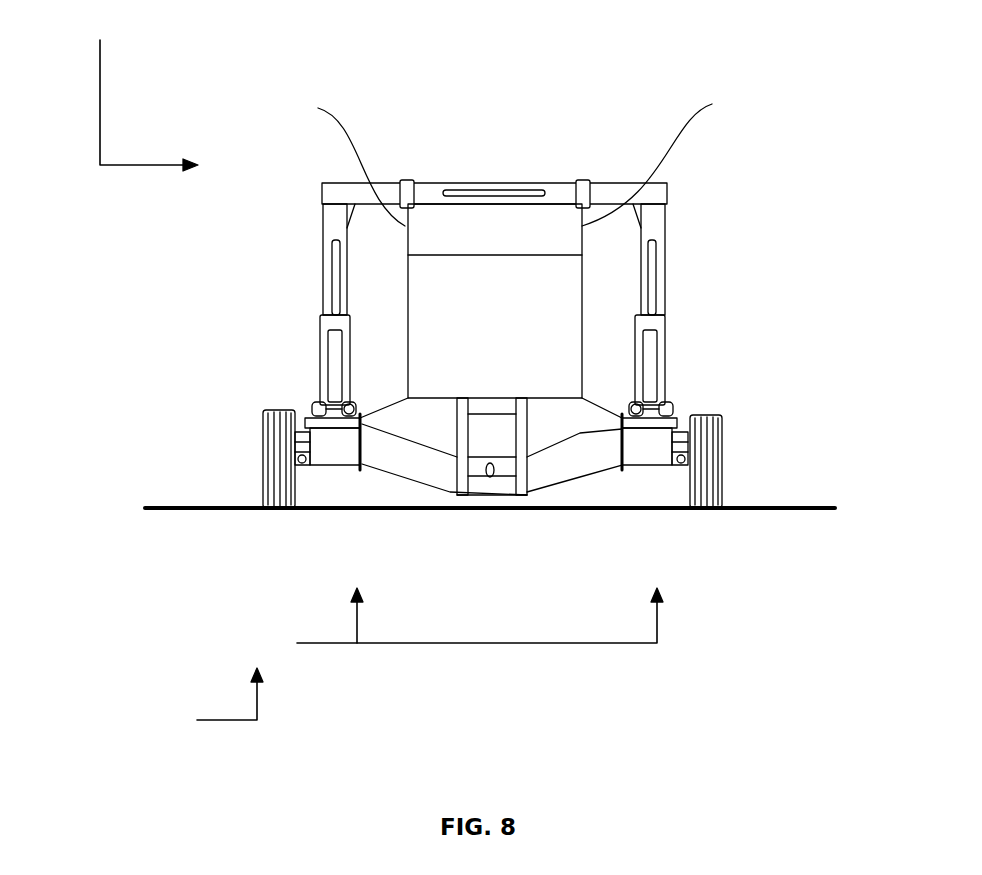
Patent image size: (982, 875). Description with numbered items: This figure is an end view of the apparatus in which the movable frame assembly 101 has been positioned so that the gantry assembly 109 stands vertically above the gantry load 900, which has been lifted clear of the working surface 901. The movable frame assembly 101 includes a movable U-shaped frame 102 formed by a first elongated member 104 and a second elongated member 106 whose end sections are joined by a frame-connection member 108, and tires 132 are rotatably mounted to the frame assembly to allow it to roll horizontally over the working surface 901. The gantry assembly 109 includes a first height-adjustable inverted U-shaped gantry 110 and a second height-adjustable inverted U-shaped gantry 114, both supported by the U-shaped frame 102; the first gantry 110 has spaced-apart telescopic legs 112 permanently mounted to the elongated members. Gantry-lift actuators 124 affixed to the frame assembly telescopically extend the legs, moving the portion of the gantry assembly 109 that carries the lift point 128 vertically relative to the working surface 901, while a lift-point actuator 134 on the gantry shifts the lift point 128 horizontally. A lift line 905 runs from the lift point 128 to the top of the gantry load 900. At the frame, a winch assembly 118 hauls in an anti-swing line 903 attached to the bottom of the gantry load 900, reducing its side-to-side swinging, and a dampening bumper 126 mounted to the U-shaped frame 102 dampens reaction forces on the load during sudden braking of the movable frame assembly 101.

The movable frame assembly 101 is at (199, 701).
The movable U-shaped frame 102 is at (451, 622).
The first elongated member 104 is at (332, 452).
The second elongated member 106 is at (645, 455).
The frame-connection member 108 is at (553, 468).
The gantry assembly 109 is at (139, 88).
The first height-adjustable inverted U-shaped gantry 110 is at (322, 193).
The first spaced-apart telescopic legs 112 is at (325, 215).
The second height-adjustable inverted U-shaped gantry 114 is at (665, 215).
The winch assembly 118 is at (320, 410).
The gantry-lift actuator 124 is at (330, 345).
The dampening bumper 126 is at (507, 485).
The lift point 128 is at (407, 180).
The tires 132 is at (270, 425).
The lift-point actuator 134 is at (462, 185).
The gantry load 900 is at (495, 301).
The working surface 901 is at (835, 508).
The anti-swing line 903 is at (369, 404).
The lift line 905 is at (514, 159).